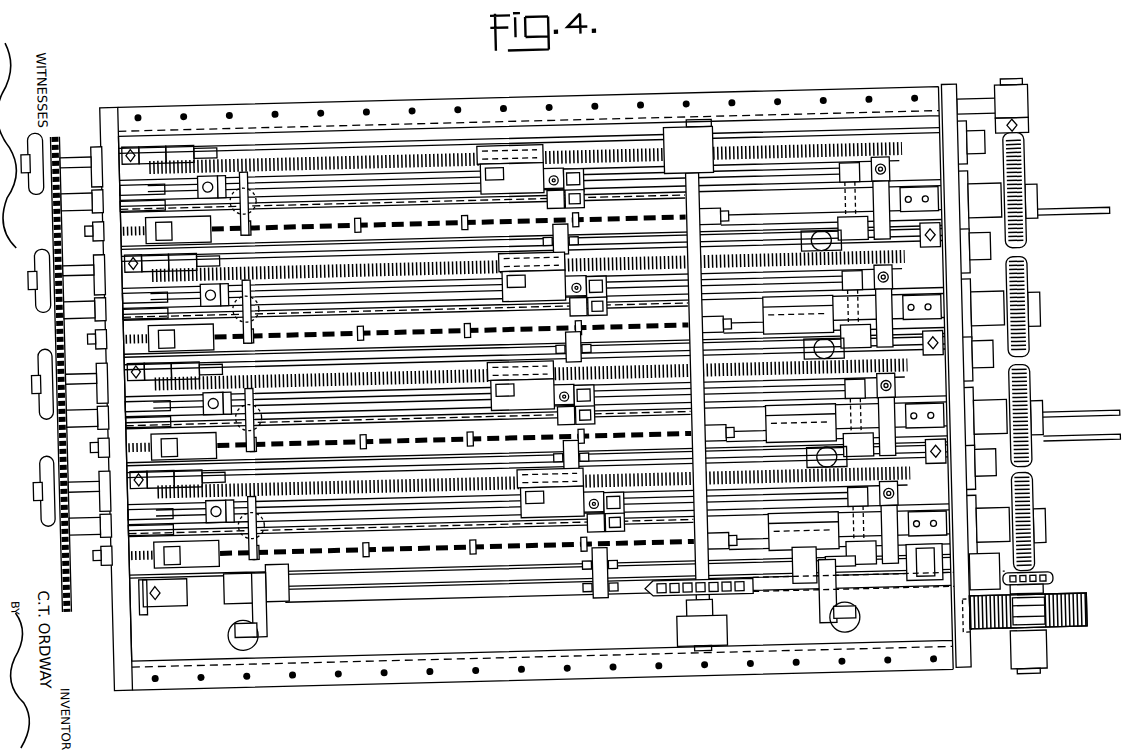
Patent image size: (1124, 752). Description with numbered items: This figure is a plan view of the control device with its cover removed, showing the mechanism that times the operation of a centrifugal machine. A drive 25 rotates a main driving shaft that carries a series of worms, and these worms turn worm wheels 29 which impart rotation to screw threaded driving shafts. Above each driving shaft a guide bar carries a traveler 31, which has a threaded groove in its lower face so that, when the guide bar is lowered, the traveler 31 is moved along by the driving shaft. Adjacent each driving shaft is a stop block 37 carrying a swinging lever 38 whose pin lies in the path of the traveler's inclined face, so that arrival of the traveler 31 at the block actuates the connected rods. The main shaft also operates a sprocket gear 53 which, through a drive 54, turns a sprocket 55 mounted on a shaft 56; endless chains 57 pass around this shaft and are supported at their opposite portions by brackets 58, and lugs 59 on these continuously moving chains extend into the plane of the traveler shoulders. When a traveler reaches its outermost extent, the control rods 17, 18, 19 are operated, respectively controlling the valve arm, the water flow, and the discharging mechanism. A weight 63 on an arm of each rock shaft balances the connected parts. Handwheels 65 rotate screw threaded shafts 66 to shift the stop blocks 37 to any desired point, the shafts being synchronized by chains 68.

The control rod 17 is at (1106, 231).
The control rod 18 is at (1098, 426).
The control rod 19 is at (1098, 454).
The drive 25 is at (1070, 639).
The worm wheel 29 is at (1031, 510).
The traveler 31 is at (786, 417).
The stop block 37 is at (540, 148).
The lever 38 is at (553, 292).
The sprocket gear 53 is at (1048, 591).
The drive 54 is at (790, 598).
The sprocket 55 is at (668, 600).
The shaft 56 is at (712, 498).
The endless chain 57 is at (452, 547).
The bracket 58 is at (205, 566).
The lug 59 is at (479, 546).
The weight 63 is at (253, 630).
The handwheel 65 is at (40, 447).
The screw threaded shaft 66 is at (420, 489).
The chain 68 is at (50, 514).